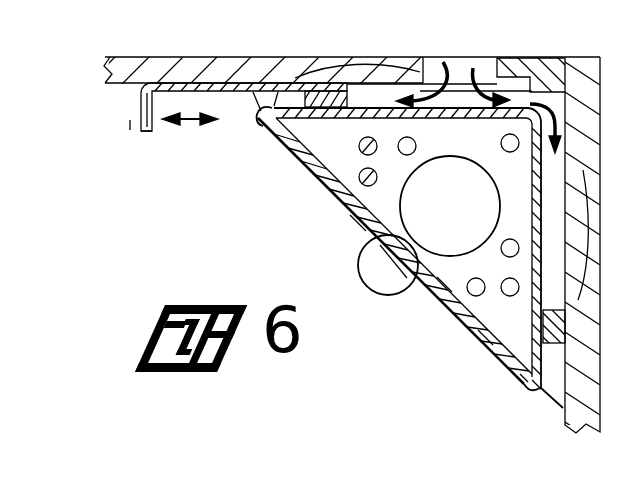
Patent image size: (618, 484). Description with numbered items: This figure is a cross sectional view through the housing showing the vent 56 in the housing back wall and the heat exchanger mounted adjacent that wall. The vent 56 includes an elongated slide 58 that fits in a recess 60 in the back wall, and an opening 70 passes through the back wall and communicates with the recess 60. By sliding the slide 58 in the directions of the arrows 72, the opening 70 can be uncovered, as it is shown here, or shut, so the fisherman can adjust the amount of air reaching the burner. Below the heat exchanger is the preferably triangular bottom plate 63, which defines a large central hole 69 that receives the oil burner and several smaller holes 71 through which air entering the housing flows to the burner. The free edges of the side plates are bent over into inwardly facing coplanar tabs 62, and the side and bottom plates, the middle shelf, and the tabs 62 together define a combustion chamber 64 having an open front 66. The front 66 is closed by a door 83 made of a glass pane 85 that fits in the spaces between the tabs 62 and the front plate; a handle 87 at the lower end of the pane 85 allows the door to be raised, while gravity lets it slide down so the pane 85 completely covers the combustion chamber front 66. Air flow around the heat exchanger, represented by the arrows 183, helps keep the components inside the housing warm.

The vent 56 is at (120, 127).
The elongated slide 58 is at (143, 133).
The recess 60 is at (140, 106).
The tabs 62 is at (257, 132).
The bottom plate 63 is at (315, 158).
The combustion chamber 64 is at (447, 283).
The open front 66 is at (505, 353).
The large central hole 69 is at (493, 186).
The opening 70 is at (452, 59).
The smaller holes 71 is at (362, 152).
The arrows 72 is at (193, 124).
The door 83 is at (352, 229).
The glass pane 85 is at (485, 338).
The handle 87 is at (383, 278).
The arrows 183 is at (480, 60).